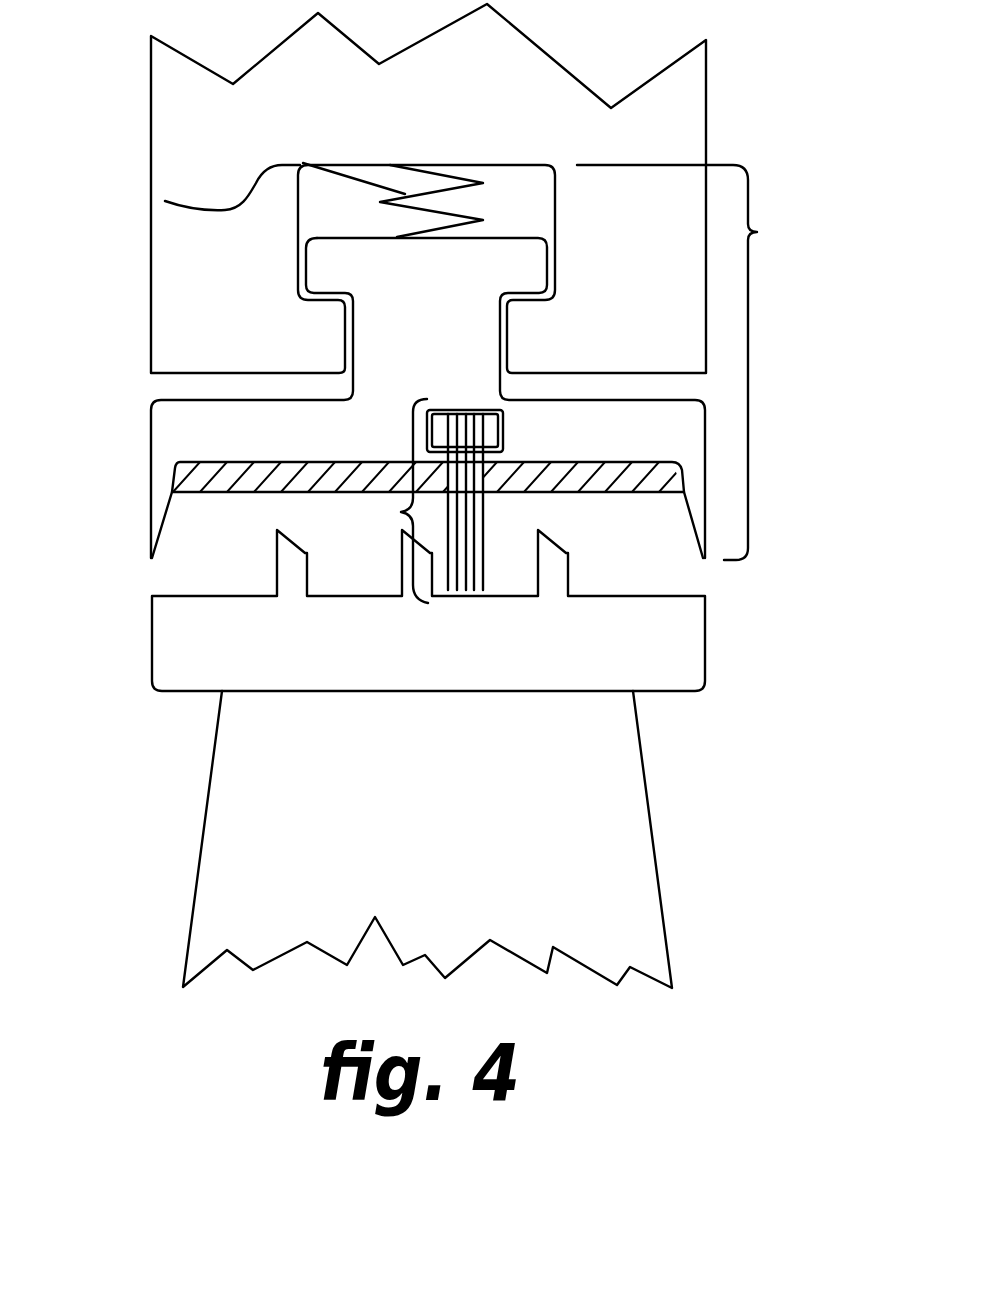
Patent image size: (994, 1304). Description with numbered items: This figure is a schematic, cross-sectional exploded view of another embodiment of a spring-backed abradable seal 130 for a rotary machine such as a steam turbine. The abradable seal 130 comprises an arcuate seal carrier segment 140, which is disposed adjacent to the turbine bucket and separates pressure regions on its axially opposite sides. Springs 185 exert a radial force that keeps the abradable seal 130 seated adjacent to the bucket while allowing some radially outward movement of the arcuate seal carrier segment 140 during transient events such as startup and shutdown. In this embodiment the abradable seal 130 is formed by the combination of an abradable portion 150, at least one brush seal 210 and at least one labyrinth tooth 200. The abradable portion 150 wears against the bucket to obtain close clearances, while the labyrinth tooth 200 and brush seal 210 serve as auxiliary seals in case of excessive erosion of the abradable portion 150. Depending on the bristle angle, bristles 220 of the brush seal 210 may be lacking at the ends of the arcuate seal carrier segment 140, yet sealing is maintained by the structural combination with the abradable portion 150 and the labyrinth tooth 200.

The abradable seal 130 is at (483, 282).
The arcuate seal carrier segment 140 is at (450, 317).
The abradable portion 150 is at (198, 473).
The springs 185 is at (165, 201).
The labyrinth tooth 200 is at (157, 502).
The brush seal 210 is at (388, 501).
The bristles 220 is at (478, 523).